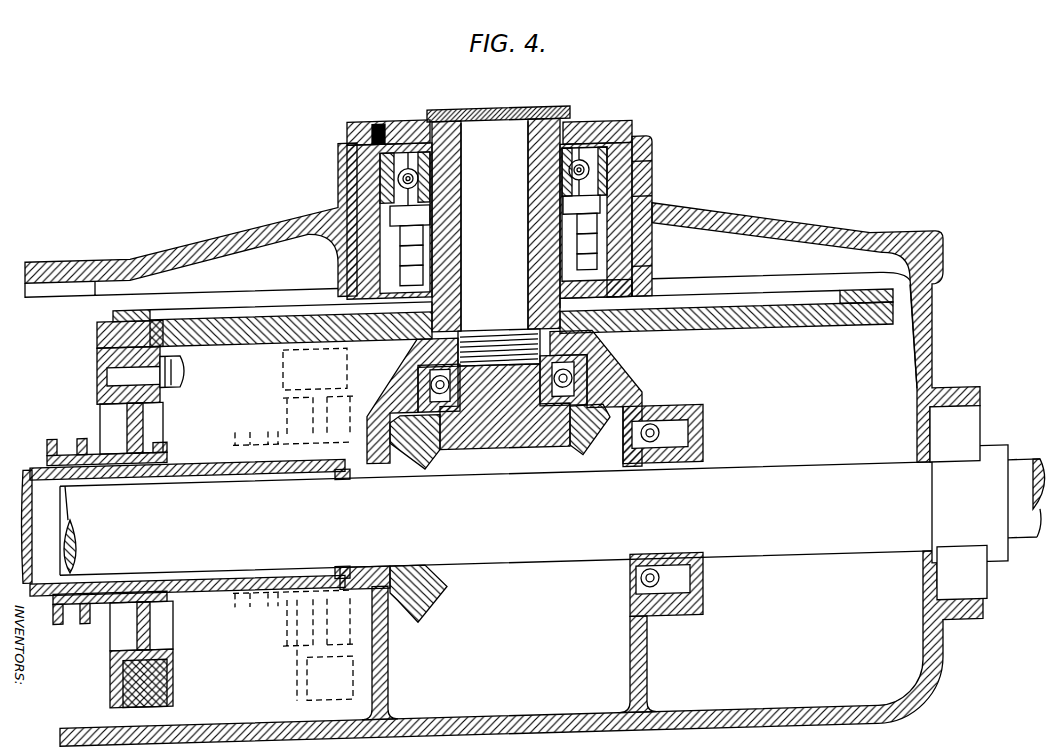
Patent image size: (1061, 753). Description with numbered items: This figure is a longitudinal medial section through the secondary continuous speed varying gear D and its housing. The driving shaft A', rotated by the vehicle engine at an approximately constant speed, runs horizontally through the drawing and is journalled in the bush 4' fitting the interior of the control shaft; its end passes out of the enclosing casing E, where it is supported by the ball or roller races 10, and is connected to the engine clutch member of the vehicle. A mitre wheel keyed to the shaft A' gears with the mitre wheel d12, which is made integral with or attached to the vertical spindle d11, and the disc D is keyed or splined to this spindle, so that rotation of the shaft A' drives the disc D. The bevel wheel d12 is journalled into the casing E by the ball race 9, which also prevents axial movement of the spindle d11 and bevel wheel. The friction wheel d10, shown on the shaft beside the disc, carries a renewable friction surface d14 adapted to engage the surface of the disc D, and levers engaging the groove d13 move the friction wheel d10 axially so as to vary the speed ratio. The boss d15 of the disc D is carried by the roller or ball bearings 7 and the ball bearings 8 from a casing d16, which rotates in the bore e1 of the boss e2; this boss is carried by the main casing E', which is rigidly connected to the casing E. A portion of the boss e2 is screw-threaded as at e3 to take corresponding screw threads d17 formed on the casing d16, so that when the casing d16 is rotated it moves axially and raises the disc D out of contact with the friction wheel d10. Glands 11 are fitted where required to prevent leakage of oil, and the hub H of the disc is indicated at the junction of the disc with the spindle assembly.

The glands 11 is at (419, 121).
The screw threads d17 is at (628, 153).
The screw-threaded portion e3 is at (645, 152).
The ball bearings 8 is at (590, 174).
The boss e2 is at (634, 194).
The roller or ball bearings 7 is at (662, 220).
The main casing E' is at (504, 439).
The bore e1 is at (640, 257).
The casing d16 is at (632, 282).
The boss d15 is at (542, 181).
The spindle d11 is at (498, 219).
The renewable friction surface d14 is at (120, 369).
The groove d13 is at (62, 428).
The friction wheel d10 is at (140, 429).
The hub / key H is at (620, 331).
The ball race 9 is at (574, 384).
The casing E is at (663, 378).
The disc D is at (812, 331).
The ball or roller races 10 is at (693, 436).
The mitre wheel d12 is at (522, 450).
The bush 4' is at (184, 527).
The driving shaft A' is at (552, 514).